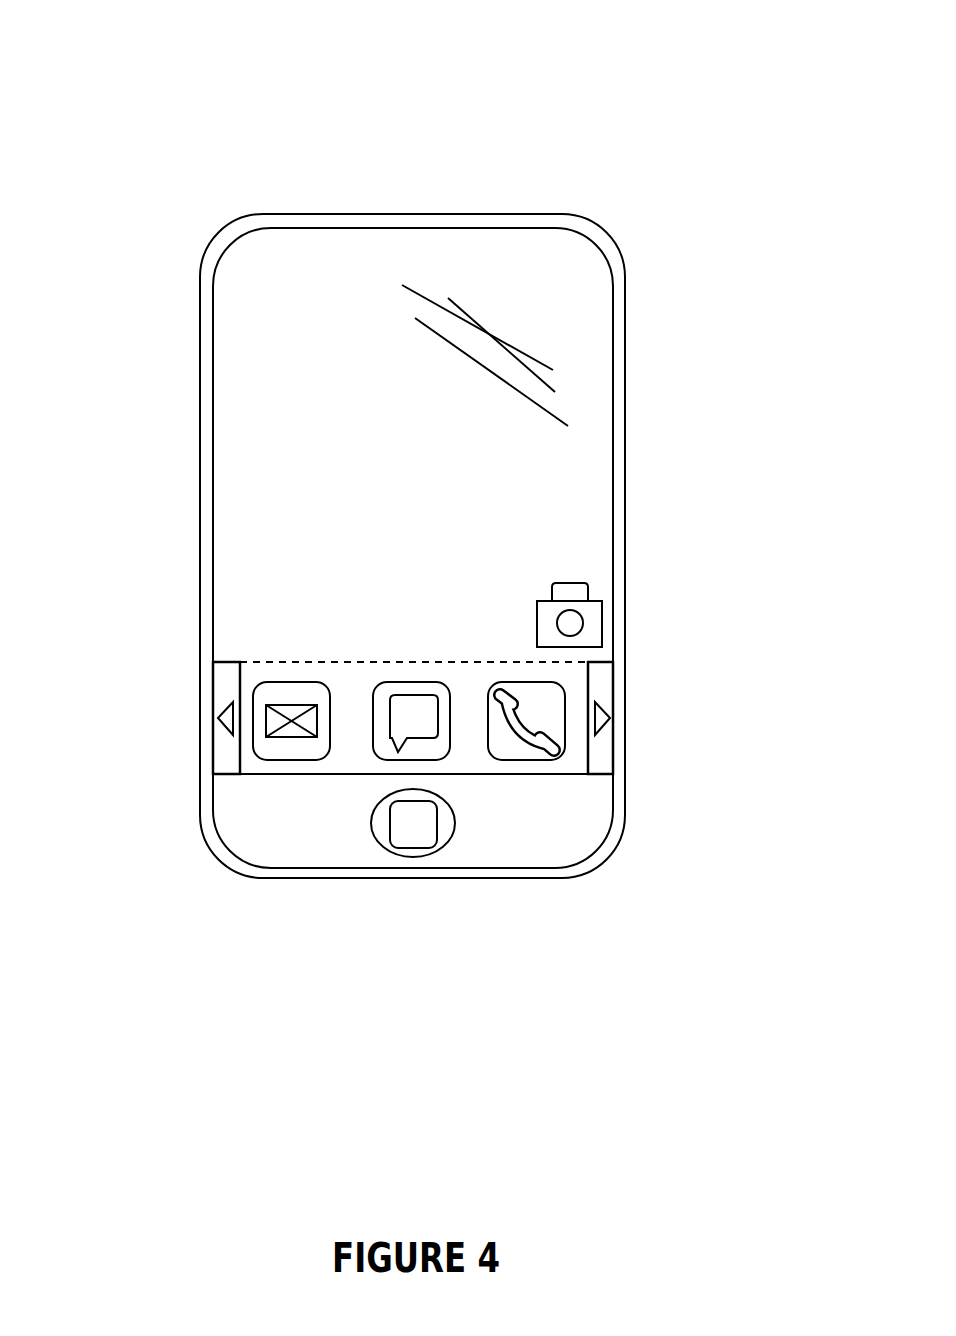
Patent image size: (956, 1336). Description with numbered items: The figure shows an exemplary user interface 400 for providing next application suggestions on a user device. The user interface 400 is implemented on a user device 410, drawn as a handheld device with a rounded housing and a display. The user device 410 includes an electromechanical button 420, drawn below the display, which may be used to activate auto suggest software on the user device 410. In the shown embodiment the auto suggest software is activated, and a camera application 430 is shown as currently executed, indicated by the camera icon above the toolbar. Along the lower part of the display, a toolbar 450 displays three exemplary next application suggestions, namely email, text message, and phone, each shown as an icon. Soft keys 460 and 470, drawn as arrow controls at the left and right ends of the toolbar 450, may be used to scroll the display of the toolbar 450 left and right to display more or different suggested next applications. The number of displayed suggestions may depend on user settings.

The user interface 400 is at (440, 26).
The user device 410 is at (627, 409).
The electromechanical button 420 is at (411, 858).
The camera application 430 is at (568, 582).
The toolbar 450 is at (372, 660).
The soft key 460 is at (198, 720).
The soft key 470 is at (627, 720).